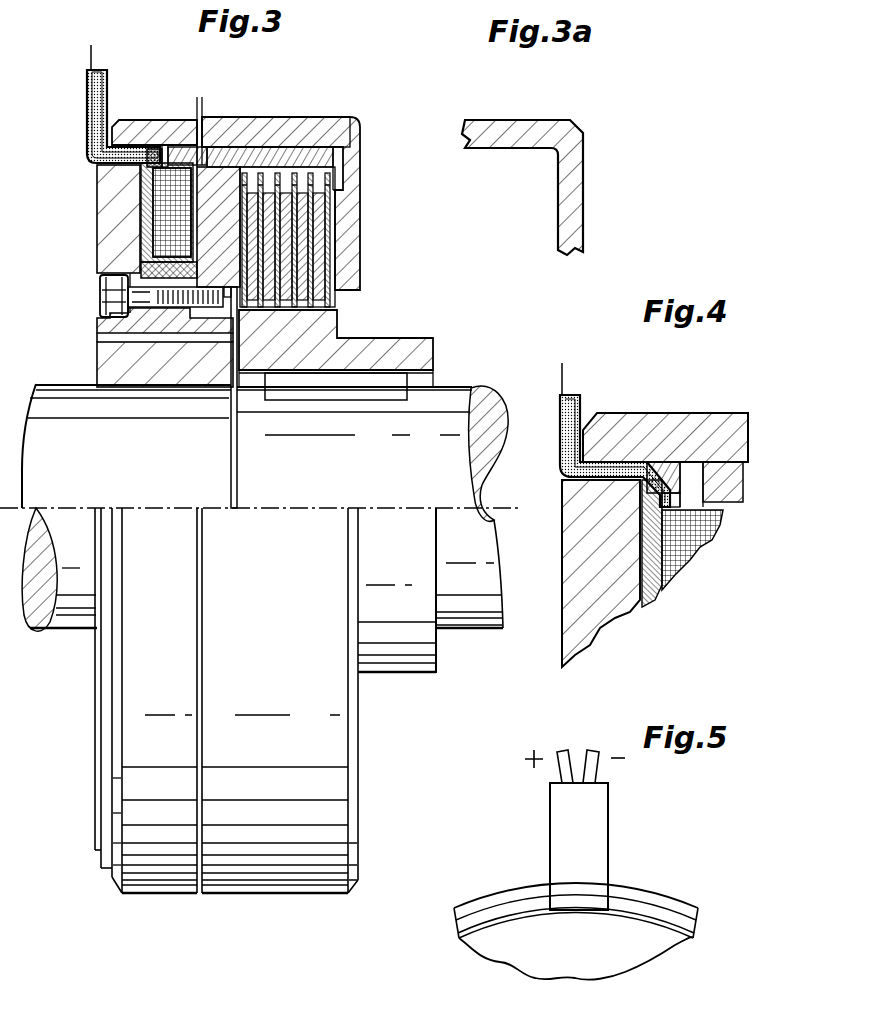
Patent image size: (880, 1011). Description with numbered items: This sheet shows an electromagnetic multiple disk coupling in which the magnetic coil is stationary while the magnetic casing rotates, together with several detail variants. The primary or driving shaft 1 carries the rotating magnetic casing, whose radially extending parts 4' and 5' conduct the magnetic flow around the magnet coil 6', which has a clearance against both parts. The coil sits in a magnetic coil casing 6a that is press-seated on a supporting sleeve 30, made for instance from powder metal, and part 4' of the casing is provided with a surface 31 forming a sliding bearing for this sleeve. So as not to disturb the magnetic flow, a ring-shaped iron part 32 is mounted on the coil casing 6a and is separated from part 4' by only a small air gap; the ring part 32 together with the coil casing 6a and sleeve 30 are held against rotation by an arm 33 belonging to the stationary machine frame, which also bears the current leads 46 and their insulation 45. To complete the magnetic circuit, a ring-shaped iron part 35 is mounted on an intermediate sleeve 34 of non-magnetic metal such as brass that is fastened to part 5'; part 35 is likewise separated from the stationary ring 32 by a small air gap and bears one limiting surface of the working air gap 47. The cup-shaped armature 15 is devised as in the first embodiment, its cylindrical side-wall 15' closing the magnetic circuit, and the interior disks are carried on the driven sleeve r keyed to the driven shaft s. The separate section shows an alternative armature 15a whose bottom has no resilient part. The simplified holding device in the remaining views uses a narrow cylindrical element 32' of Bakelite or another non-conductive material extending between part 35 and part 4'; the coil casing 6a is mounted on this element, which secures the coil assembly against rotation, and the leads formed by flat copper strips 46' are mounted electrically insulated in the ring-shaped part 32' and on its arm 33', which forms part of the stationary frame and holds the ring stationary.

In FIG. 3, the primary shaft 1 is at (55, 405).
In FIG. 3, the part of the magnetic casing 4' is at (138, 529).
In FIG. 4, the part of the magnetic casing 4' is at (601, 573).
In FIG. 5, the part of the magnetic casing 4' is at (576, 974).
In FIG. 3, the part of the magnetic casing 5' is at (265, 175).
In FIG. 3, the magnet coil 6' is at (117, 212).
In FIG. 3, the magnetic coil casing 6a is at (148, 205).
In FIG. 3, the cup-shaped armature 15 is at (281, 177).
In FIG. 3, the cylindrical side-wall 15' is at (276, 105).
In FIG. 3A, the cup-shaped armature 15a is at (550, 133).
In FIG. 3, the supporting sleeve 30 is at (147, 270).
In FIG. 3, the surface 31 is at (135, 298).
In FIG. 3, the ring-shaped iron part 32 is at (145, 115).
In FIG. 4, the cylindrical element 32' is at (695, 439).
In FIG. 3, the arm 33 is at (101, 116).
In FIG. 4, the arm 33' is at (615, 439).
In FIG. 5, the arm 33' is at (614, 830).
In FIG. 3, the intermediate sleeve 34 is at (200, 147).
In FIG. 3, the ring-shaped iron part 35 is at (168, 125).
In FIG. 4, the ring-shaped iron part 35 is at (713, 430).
In FIG. 5, the ring-shaped iron part 35 is at (640, 892).
In FIG. 3, the insulation 45 is at (87, 88).
In FIG. 3, the lead wire 46 is at (67, 53).
In FIG. 4, the flat copper strips 46' is at (595, 370).
In FIG. 3, the working air gap 47 is at (177, 97).
In FIG. 3, the driven sleeve r is at (423, 350).
In FIG. 3, the shaft sleeve s is at (463, 402).